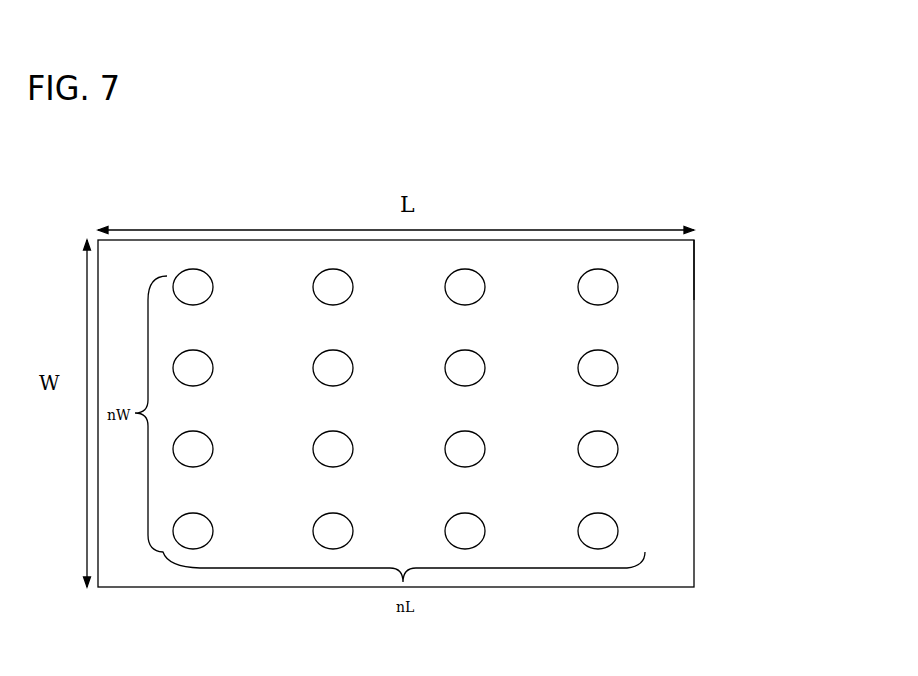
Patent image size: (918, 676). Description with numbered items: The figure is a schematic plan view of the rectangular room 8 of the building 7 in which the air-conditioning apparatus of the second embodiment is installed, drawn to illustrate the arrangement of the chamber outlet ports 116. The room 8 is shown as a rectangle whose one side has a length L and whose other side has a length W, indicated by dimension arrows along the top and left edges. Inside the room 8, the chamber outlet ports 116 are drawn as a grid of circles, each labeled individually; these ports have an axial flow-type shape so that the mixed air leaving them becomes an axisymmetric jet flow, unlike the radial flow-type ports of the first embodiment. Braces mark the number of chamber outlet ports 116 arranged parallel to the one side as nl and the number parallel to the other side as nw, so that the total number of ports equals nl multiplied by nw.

The building 7 is at (694, 402).
The room 8 is at (690, 270).
The chamber outlet ports 116 is at (205, 534).